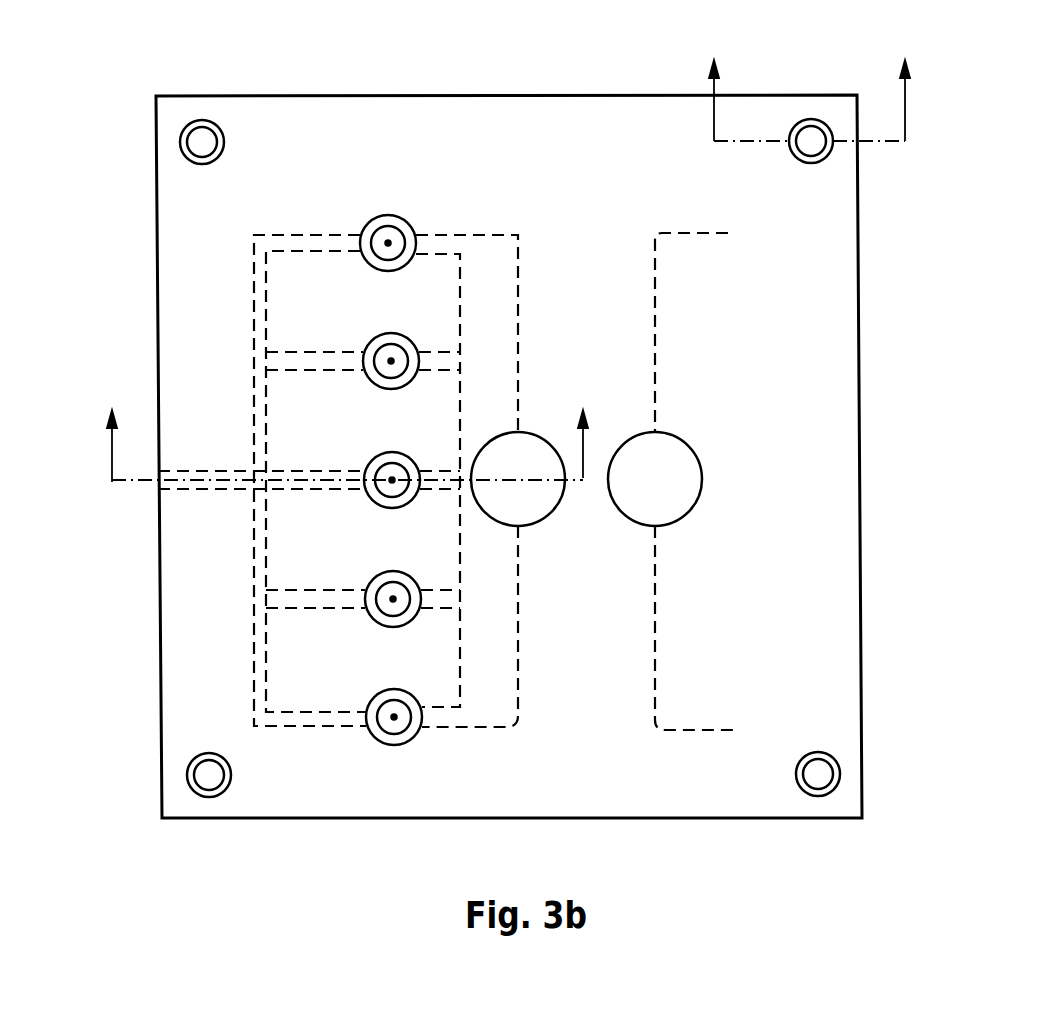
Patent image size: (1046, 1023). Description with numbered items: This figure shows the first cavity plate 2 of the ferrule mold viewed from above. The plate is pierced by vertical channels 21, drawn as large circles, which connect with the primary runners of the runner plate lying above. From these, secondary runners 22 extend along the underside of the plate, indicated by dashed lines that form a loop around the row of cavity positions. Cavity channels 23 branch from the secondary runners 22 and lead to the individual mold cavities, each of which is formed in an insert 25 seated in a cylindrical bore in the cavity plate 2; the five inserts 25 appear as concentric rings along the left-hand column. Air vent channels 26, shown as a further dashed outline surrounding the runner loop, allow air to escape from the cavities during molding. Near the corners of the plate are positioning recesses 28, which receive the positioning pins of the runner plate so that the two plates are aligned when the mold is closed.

The first cavity plate 2 is at (786, 245).
The vertical channel 21 is at (664, 459).
The secondary runner 22 is at (478, 289).
The cavity channel 23 is at (442, 480).
The insert 25 is at (388, 243).
The air vent channel 26 is at (285, 248).
The positioning recess 28 is at (809, 143).